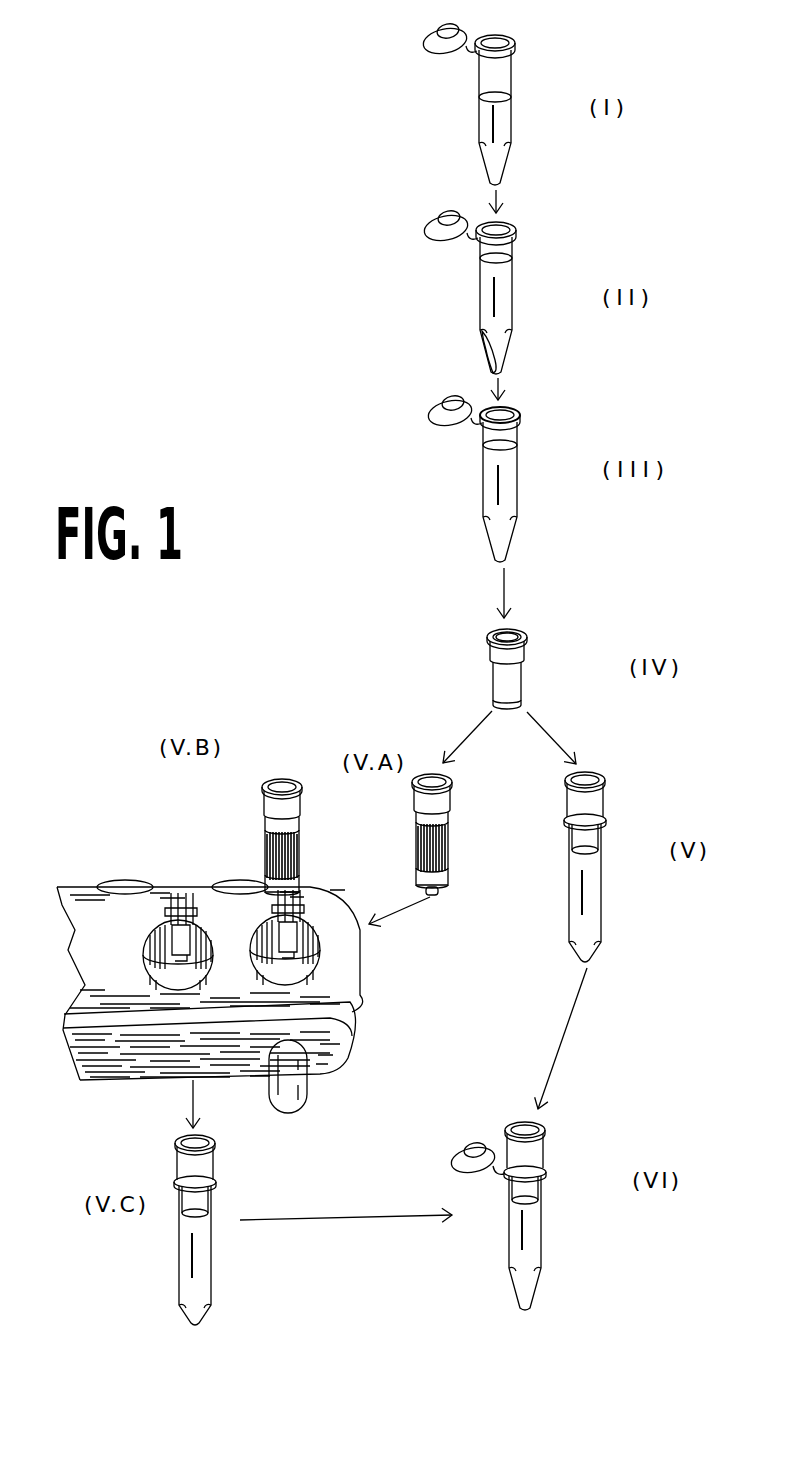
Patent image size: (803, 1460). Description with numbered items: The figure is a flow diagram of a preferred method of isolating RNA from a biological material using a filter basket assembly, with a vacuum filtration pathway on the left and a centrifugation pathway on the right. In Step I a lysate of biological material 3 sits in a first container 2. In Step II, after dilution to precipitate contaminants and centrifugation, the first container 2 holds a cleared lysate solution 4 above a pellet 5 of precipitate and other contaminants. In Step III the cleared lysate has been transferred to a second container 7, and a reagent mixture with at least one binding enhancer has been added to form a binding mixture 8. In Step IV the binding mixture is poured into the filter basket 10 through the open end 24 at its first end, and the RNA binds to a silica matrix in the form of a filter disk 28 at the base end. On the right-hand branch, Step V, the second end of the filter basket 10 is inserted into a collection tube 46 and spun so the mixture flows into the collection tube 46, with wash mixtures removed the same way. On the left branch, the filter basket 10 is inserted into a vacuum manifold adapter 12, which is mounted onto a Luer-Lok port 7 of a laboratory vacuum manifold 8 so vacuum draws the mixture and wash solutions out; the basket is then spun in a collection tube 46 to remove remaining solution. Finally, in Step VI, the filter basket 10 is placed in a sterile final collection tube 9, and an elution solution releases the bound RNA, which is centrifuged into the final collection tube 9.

The first container 2 is at (512, 70).
The lysate of biological material 3 is at (504, 112).
The cleared lysate solution 4 is at (506, 287).
The pellet 5 is at (499, 352).
The second container 7 is at (517, 430).
The binding mixture 8 is at (510, 481).
The final collection tube 9 is at (538, 1227).
The filter basket 10 is at (523, 667).
The vacuum manifold adapter 12 is at (450, 845).
The open end 24 is at (510, 635).
The filter disk 28 is at (521, 700).
The collection tube 46 is at (594, 885).